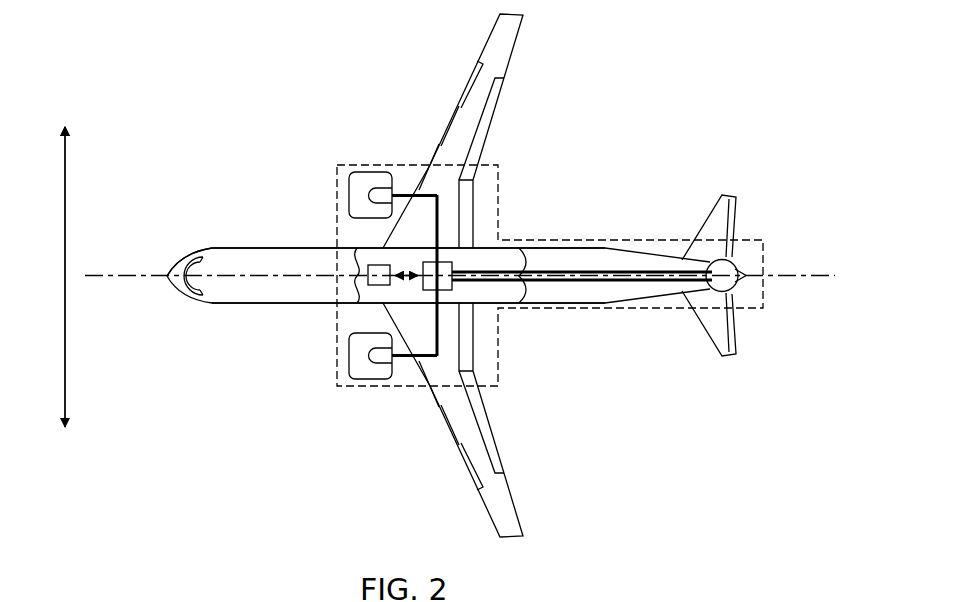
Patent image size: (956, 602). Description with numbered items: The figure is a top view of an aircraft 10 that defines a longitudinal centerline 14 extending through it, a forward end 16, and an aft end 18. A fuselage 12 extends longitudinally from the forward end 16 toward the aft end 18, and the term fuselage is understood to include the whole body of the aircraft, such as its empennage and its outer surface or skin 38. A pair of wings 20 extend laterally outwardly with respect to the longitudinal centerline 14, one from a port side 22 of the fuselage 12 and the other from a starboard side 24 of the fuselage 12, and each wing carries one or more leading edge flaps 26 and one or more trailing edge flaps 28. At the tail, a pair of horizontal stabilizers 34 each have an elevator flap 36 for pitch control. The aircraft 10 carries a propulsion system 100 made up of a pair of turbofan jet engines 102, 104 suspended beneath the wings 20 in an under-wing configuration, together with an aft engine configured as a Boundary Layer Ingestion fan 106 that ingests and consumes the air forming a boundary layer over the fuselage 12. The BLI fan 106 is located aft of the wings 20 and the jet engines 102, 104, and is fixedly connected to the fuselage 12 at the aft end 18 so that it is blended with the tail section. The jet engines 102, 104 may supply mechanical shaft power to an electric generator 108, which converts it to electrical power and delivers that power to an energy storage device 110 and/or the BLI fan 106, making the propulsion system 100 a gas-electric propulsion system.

The aircraft 10 is at (620, 98).
The fuselage 12 is at (214, 292).
The longitudinal centerline 14 is at (100, 283).
The forward end 16 is at (168, 294).
The aft end 18 is at (702, 348).
The wings 20 is at (510, 34).
The port side 22 is at (282, 306).
The starboard side 24 is at (281, 246).
The leading edge flaps 26 is at (449, 428).
The trailing edge flaps 28 is at (498, 430).
The horizontal stabilizers 34 is at (715, 218).
The elevator flap 36 is at (737, 212).
The outer surface or skin 38 is at (574, 288).
The propulsion system 100 is at (564, 239).
The turbofan jet engine 102 is at (362, 368).
The turbofan jet engine 104 is at (360, 181).
The Boundary Layer Ingestion (BLI) fan 106 is at (737, 251).
The electric generator 108 is at (453, 259).
The energy storage device 110 is at (380, 287).